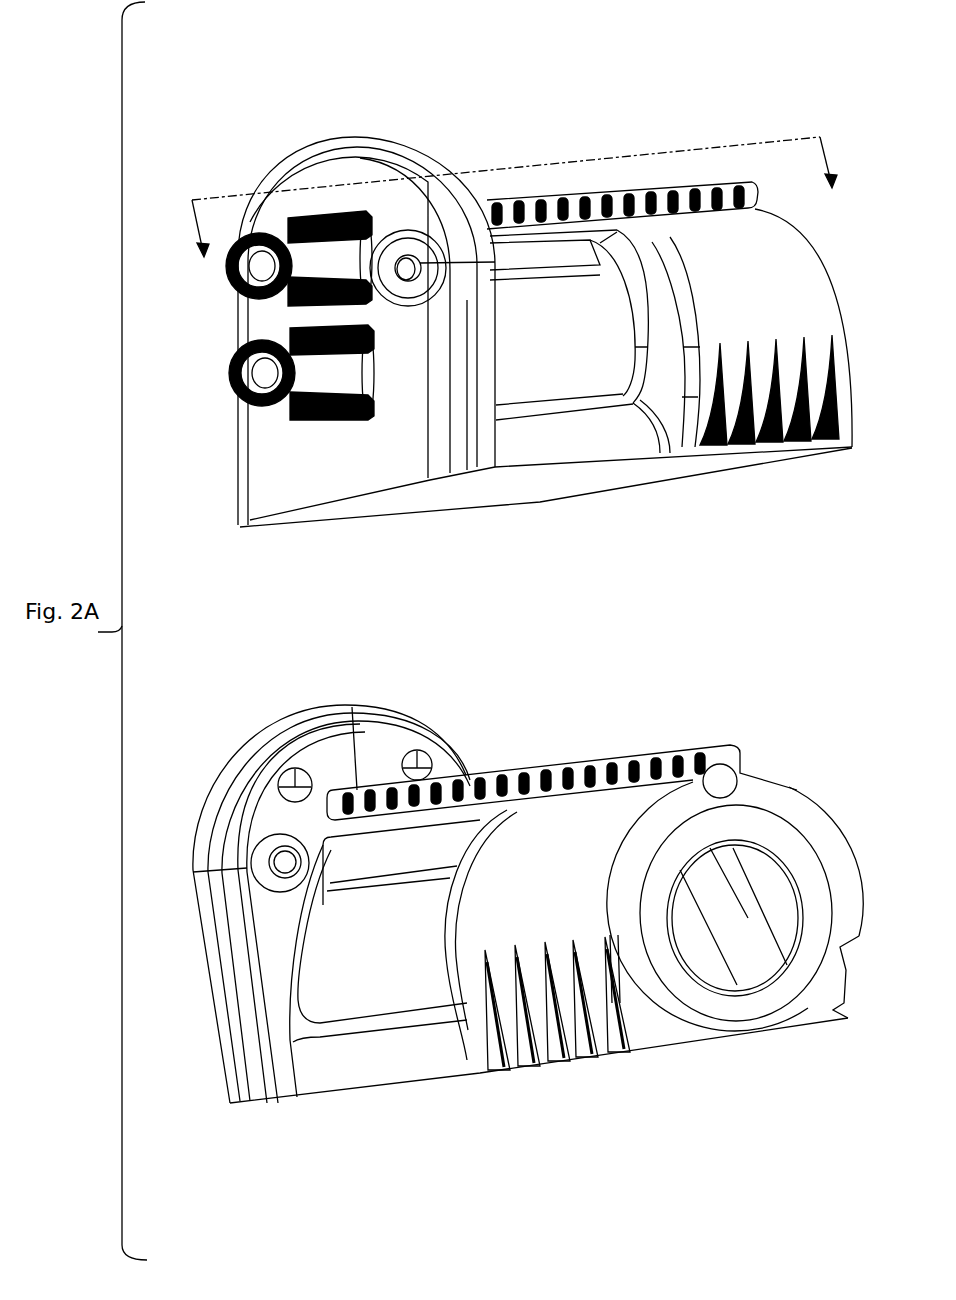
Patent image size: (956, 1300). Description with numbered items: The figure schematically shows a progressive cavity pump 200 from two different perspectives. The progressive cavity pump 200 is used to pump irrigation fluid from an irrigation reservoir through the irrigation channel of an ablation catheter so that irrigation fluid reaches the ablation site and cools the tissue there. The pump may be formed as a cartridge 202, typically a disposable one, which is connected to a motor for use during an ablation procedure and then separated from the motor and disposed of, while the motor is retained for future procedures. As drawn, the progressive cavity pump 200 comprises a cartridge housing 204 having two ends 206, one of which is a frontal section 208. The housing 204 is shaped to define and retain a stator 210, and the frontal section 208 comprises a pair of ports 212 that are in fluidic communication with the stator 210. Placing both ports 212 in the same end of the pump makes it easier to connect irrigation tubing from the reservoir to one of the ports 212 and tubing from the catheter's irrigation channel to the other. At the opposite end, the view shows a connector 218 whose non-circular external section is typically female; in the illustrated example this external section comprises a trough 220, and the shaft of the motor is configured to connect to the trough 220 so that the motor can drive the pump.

The progressive cavity pump 200 is at (511, 616).
The cartridge 202 is at (786, 33).
The cartridge housing 204 is at (667, 490).
The ends 206 is at (850, 284).
The frontal section 208 is at (298, 485).
The stator 210 is at (578, 352).
The ports 212 is at (262, 233).
The connector 218 is at (692, 943).
The trough 220 is at (733, 928).